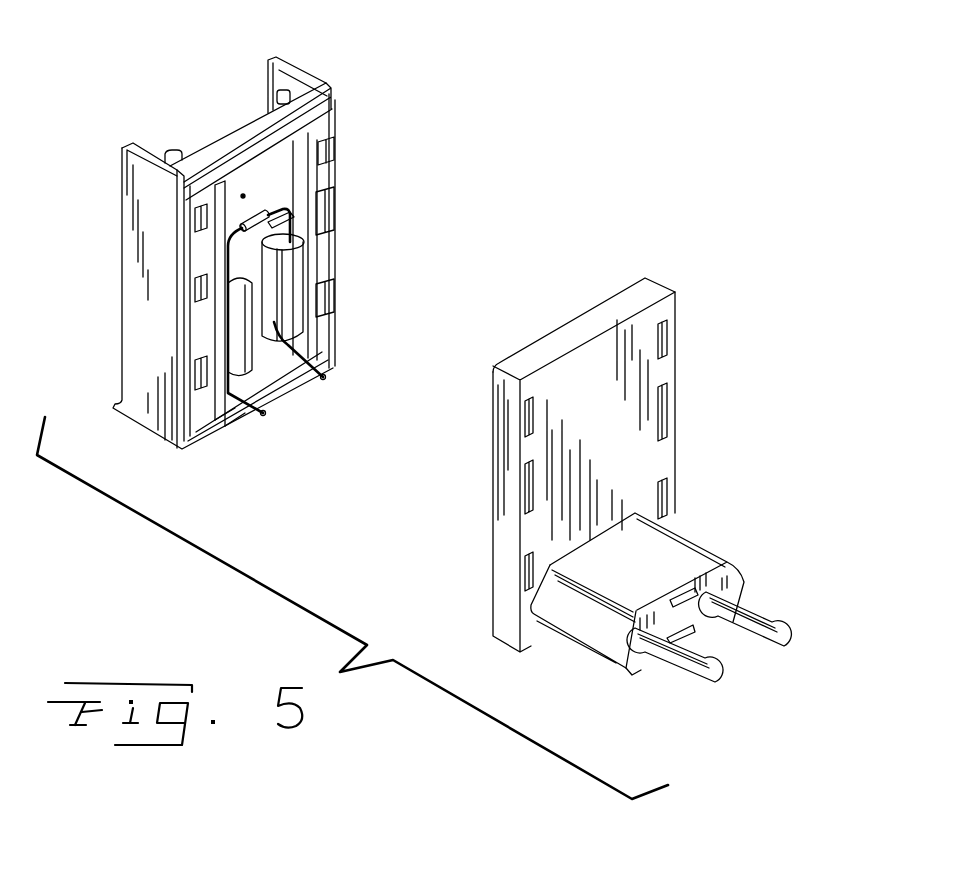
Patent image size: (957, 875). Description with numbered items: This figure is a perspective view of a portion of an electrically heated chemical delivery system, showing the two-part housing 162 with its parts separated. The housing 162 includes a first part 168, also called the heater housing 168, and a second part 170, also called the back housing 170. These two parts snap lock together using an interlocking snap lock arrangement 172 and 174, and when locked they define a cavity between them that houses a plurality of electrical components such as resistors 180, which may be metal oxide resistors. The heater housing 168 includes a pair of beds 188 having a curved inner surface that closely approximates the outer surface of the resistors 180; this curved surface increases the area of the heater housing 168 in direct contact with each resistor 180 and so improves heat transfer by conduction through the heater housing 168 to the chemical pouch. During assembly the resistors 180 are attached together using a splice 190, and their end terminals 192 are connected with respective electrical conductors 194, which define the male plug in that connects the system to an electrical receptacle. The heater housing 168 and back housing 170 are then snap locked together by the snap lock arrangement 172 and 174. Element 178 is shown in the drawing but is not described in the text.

The housing 162 is at (580, 213).
The first part (heater housing) 168 is at (160, 442).
The second part (back housing) 170 is at (492, 498).
The snap lock arrangement 172 is at (197, 280).
The snap lock arrangement 174 is at (665, 405).
The housing back wall 178 is at (243, 196).
The resistors 180 is at (293, 265).
The beds 188 is at (275, 342).
The splice 190 is at (262, 208).
The end terminals 192 is at (263, 414).
The electrical conductors 194 is at (764, 618).